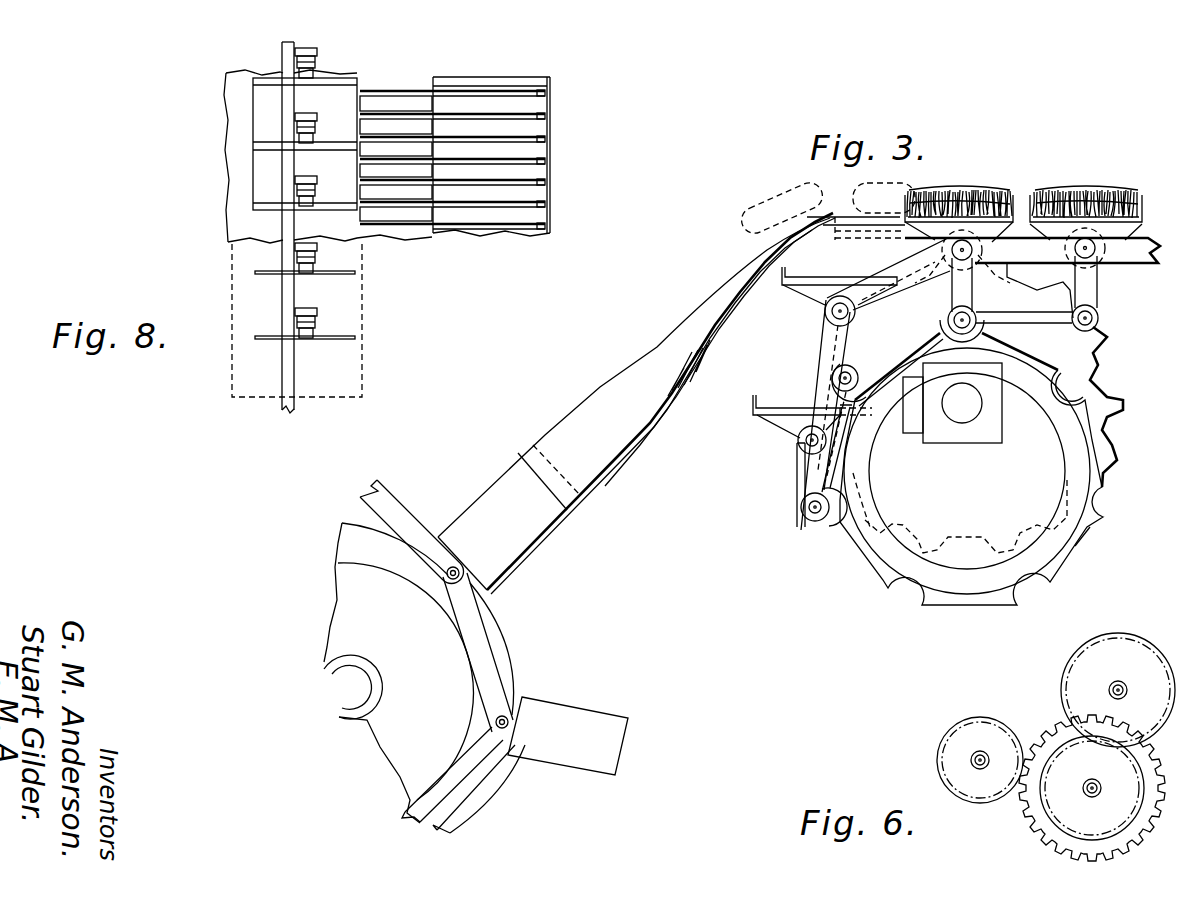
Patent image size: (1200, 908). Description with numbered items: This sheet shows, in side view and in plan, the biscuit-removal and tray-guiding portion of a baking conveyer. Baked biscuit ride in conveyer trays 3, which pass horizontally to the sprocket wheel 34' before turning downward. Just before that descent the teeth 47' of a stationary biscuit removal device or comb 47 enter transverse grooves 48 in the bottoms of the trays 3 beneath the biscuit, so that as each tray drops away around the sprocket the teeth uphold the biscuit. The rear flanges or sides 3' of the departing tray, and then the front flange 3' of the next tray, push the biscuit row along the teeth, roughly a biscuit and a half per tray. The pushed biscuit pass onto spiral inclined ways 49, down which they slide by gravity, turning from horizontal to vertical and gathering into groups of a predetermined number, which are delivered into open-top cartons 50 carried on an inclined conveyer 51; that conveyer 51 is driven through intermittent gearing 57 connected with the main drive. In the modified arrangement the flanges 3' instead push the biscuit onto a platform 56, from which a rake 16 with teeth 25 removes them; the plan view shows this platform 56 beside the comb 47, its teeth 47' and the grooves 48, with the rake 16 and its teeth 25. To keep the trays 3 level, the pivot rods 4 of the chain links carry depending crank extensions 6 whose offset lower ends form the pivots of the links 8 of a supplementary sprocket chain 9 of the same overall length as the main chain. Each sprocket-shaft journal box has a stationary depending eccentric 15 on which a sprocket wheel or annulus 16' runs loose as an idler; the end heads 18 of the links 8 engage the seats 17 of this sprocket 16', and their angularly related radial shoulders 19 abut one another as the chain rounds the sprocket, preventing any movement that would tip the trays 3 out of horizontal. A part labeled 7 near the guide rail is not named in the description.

In FIG. 8, the conveyer tray 3 is at (491, 180).
In FIG. 3, the conveyer tray 3 is at (966, 236).
In FIG. 8, the tray flange 3' is at (510, 99).
In FIG. 3, the tray flange 3' is at (1059, 245).
In FIG. 3, the pivot rod 4 is at (806, 444).
In FIG. 3, the crank extension 6 is at (838, 342).
In FIG. 3, the guide rail 7 is at (1115, 255).
In FIG. 3, the link 8 is at (820, 478).
In FIG. 3, the supplementary sprocket chain 9 is at (900, 346).
In FIG. 3, the eccentric 15 is at (905, 531).
In FIG. 8, the rake 16 is at (265, 250).
In FIG. 3, the sprocket wheel 16' is at (1107, 544).
In FIG. 3, the seat 17 is at (1107, 498).
In FIG. 3, the end head 18 is at (820, 522).
In FIG. 3, the radial shoulder 19 is at (805, 513).
In FIG. 8, the rake tooth 25 is at (343, 276).
In FIG. 3, the sprocket wheel 34' is at (1106, 377).
In FIG. 8, the biscuit removal comb 47 is at (452, 137).
In FIG. 3, the biscuit removal comb 47 is at (858, 206).
In FIG. 8, the comb tooth 47' is at (396, 185).
In FIG. 8, the transverse groove 48 is at (548, 158).
In FIG. 3, the spiral inclined way 49 is at (647, 348).
In FIG. 3, the open-top carton 50 is at (508, 467).
In FIG. 3, the carton conveyer 51 is at (388, 500).
In FIG. 8, the platform 56 is at (236, 192).
In FIG. 6, the intermittent gearing 57 is at (1067, 699).